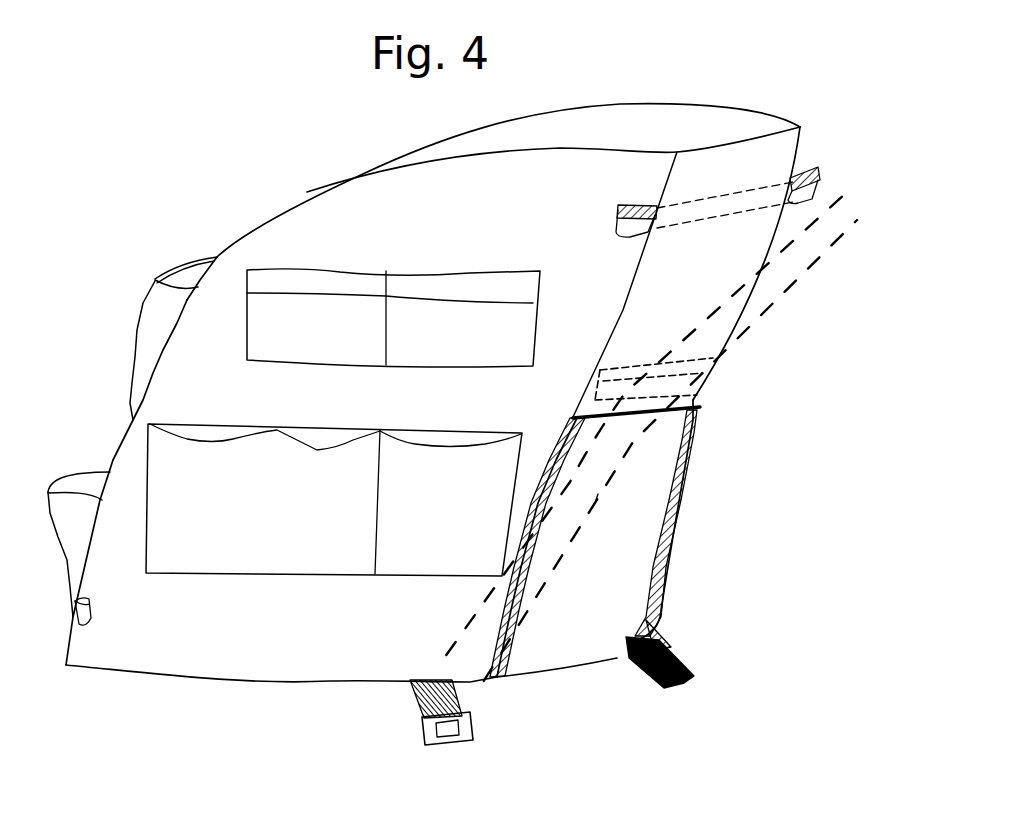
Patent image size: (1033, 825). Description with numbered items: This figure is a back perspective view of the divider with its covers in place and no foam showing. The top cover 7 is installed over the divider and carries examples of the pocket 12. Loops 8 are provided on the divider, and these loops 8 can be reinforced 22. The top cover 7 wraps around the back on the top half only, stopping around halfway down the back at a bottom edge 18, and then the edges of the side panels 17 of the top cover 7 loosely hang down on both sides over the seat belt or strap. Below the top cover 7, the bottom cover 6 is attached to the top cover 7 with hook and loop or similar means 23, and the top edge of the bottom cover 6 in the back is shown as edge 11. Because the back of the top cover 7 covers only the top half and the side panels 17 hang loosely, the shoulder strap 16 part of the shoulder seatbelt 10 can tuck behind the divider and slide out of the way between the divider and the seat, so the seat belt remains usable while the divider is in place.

The bottom cover 6 is at (593, 644).
The top cover 7 is at (485, 227).
The loops 8 is at (633, 222).
The shoulder seatbelt 10 is at (410, 692).
The top edge of the bottom cover 11 is at (677, 363).
The pocket 12 is at (246, 511).
The shoulder strap 16 is at (597, 498).
The side panels 17 is at (527, 560).
The bottom edge 18 is at (630, 413).
The reinforcement 22 is at (730, 207).
The hook and loop or similar means 23 is at (660, 387).